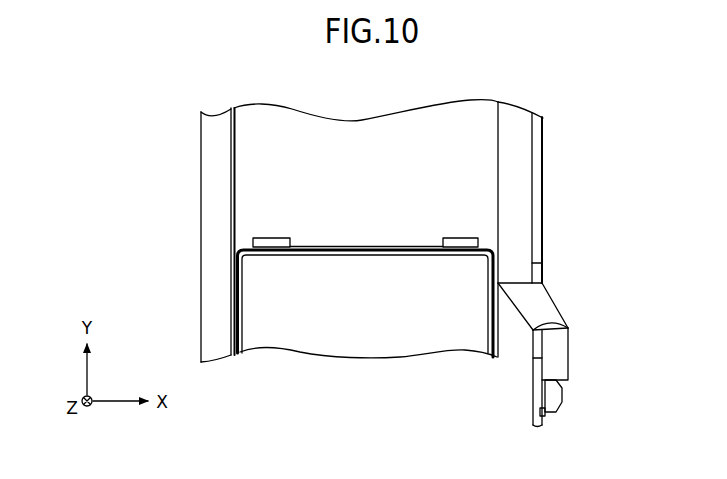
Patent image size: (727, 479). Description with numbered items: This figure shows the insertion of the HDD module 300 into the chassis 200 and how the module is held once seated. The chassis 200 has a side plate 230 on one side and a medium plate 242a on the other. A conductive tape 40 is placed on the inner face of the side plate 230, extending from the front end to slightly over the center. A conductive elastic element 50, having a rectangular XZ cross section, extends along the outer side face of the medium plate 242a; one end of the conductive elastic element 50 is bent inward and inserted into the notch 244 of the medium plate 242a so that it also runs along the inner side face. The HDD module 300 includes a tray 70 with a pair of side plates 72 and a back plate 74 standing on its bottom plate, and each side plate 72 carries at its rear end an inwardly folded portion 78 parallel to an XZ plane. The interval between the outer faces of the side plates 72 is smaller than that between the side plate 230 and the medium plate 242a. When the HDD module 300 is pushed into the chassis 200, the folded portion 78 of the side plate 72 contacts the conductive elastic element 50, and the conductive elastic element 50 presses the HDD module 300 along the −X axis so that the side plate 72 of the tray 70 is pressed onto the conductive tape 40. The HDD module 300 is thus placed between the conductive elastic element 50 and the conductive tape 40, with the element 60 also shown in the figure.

The chassis 200 is at (546, 101).
The conductive tape 40 is at (230, 148).
The side plate 230 is at (215, 185).
The conductive elastic element 50 is at (518, 175).
The medium plate 242a is at (537, 143).
The notch 244 is at (567, 334).
The HDD module 300 is at (248, 402).
The battery cell 60 is at (323, 320).
The tray 70 is at (240, 356).
The side plate 72 is at (238, 326).
The back plate 74 is at (257, 248).
The folded portion 78 is at (253, 242).